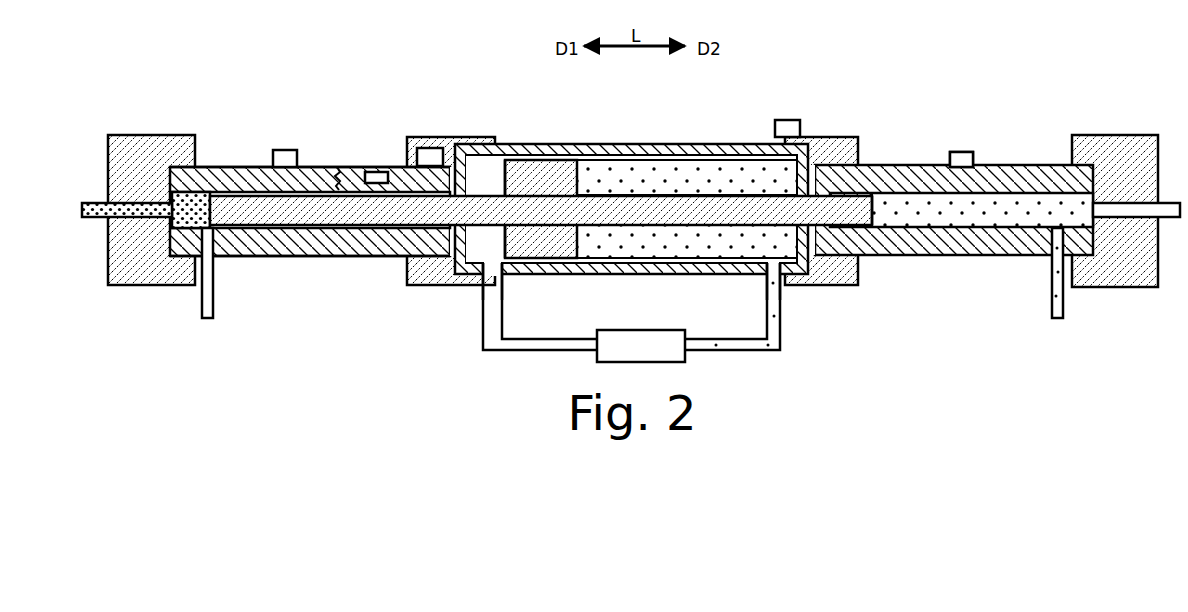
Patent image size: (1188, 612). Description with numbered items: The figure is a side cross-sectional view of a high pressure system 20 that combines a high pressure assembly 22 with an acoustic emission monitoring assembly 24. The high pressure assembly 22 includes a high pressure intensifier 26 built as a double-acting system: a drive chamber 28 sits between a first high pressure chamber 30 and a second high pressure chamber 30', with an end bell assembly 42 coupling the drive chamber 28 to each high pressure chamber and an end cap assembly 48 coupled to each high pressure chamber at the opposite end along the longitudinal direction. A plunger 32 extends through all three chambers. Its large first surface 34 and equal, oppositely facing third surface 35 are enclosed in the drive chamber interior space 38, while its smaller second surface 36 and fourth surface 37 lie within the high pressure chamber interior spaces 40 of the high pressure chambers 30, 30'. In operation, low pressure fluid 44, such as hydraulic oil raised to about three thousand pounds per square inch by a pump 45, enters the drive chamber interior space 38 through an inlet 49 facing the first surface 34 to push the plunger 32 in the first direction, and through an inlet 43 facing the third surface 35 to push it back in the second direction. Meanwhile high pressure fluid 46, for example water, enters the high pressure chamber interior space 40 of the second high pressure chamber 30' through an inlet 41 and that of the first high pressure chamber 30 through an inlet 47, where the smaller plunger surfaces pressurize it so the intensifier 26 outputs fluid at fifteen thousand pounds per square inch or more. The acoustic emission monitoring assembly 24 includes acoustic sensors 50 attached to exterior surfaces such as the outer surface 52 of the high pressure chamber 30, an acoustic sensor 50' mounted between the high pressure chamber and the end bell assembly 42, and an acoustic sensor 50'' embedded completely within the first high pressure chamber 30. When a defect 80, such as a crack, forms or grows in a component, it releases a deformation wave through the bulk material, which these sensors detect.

The high pressure system 20 is at (296, 115).
The high pressure assembly 22 is at (310, 291).
The acoustic emission monitoring assembly 24 is at (925, 140).
The high pressure intensifier 26 is at (631, 306).
The drive chamber 28 is at (631, 191).
The high pressure chamber 30 is at (310, 180).
The second high pressure chamber 30' is at (954, 191).
The plunger 32 is at (462, 274).
The first surface 34 is at (580, 174).
The third surface 35 is at (435, 174).
The second surface 36 is at (134, 224).
The fourth surface 37 is at (911, 239).
The drive chamber interior space 38 is at (518, 182).
The high pressure chamber interior space 40 is at (616, 207).
The inlet 41 is at (1031, 282).
The end bell assembly 42 is at (641, 187).
The inlet 43 is at (514, 282).
The low pressure fluid 44 is at (687, 233).
The pump 45 is at (659, 332).
The high pressure fluid 46 is at (632, 209).
The inlet 47 is at (240, 273).
The end cap assembly 48 is at (614, 228).
The inlet 49 is at (775, 305).
The acoustic sensor 50 is at (643, 131).
The acoustic sensor 50' is at (396, 140).
The acoustic sensor 50'' is at (365, 161).
The outer surface 52 is at (287, 197).
The defect 80 is at (310, 130).